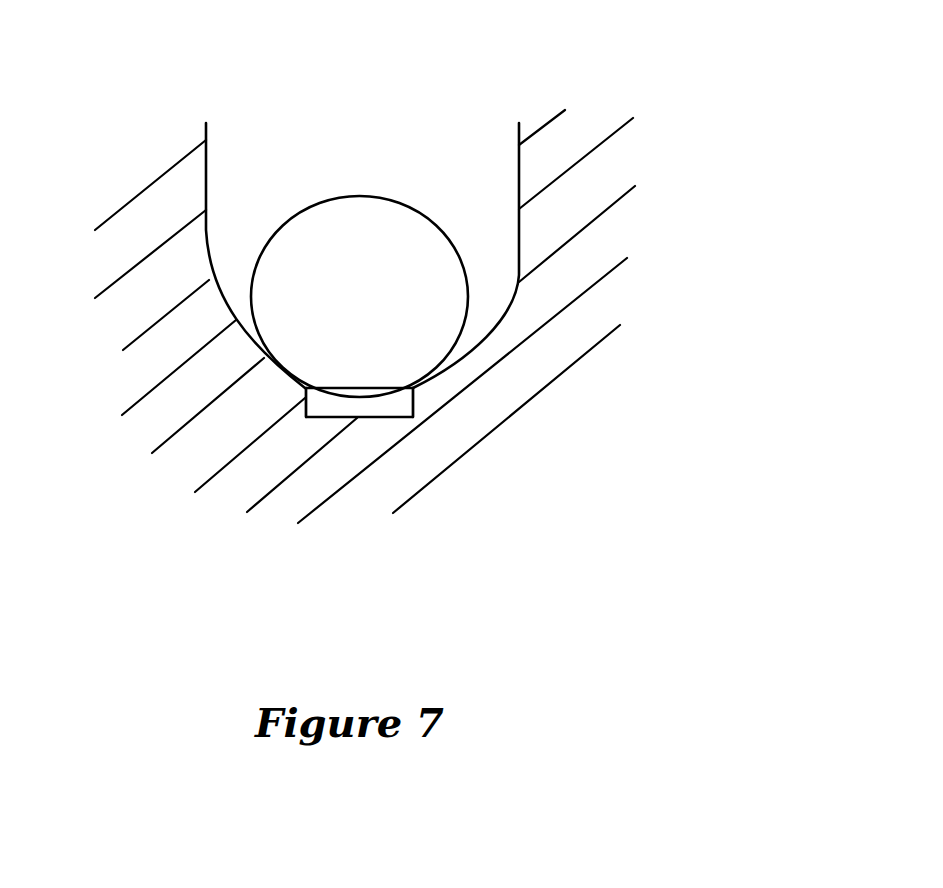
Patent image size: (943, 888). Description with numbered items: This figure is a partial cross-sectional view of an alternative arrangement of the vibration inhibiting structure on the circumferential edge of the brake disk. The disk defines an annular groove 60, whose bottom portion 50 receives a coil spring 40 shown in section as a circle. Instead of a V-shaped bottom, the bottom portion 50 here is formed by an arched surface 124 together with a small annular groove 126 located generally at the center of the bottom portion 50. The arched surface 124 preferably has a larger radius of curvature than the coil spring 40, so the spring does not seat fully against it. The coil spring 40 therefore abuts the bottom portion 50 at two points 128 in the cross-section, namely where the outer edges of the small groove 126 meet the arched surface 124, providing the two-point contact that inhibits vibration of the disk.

The coil spring 40 is at (367, 197).
The bottom portion 50 is at (267, 388).
The annular groove 60 is at (207, 245).
The arched surface 124 is at (477, 343).
The small annular groove 126 is at (331, 416).
The points 128 is at (305, 388).